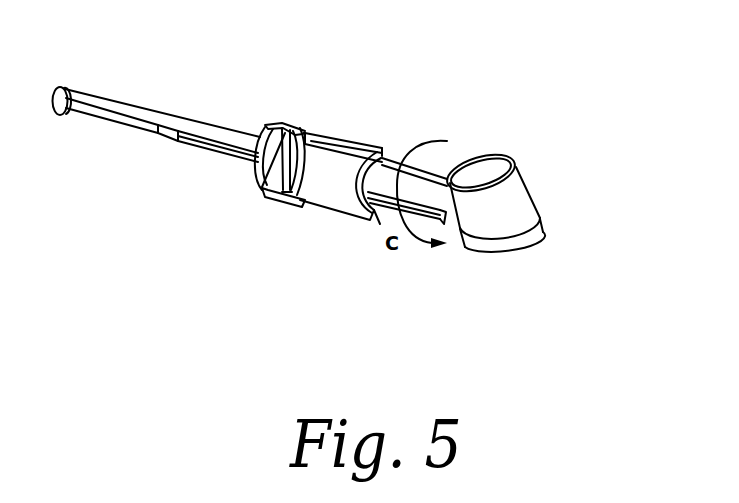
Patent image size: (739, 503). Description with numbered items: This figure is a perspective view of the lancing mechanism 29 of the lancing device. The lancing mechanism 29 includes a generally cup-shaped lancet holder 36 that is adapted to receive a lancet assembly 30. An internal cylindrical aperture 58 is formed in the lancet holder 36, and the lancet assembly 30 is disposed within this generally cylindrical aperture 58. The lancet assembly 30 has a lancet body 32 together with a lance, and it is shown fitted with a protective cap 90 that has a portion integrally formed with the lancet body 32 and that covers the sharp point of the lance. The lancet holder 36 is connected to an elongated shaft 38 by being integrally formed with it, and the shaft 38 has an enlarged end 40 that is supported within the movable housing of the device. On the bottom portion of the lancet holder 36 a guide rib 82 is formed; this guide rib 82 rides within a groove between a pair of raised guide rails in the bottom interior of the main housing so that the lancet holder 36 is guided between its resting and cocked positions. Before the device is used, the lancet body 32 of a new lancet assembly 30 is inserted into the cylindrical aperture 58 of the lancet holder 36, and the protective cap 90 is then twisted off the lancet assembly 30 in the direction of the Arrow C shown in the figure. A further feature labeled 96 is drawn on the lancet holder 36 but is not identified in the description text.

The lancing mechanism 29 is at (416, 69).
The lancet assembly 30 is at (478, 150).
The lancet body 32 is at (438, 201).
The lancet holder 36 is at (343, 121).
The elongated shaft 38 is at (120, 107).
The enlarged end 40 is at (57, 117).
The internal cylindrical aperture 58 is at (414, 151).
The guide rib 82 is at (272, 122).
The protective cap 90 is at (526, 184).
The slot 96 is at (356, 138).